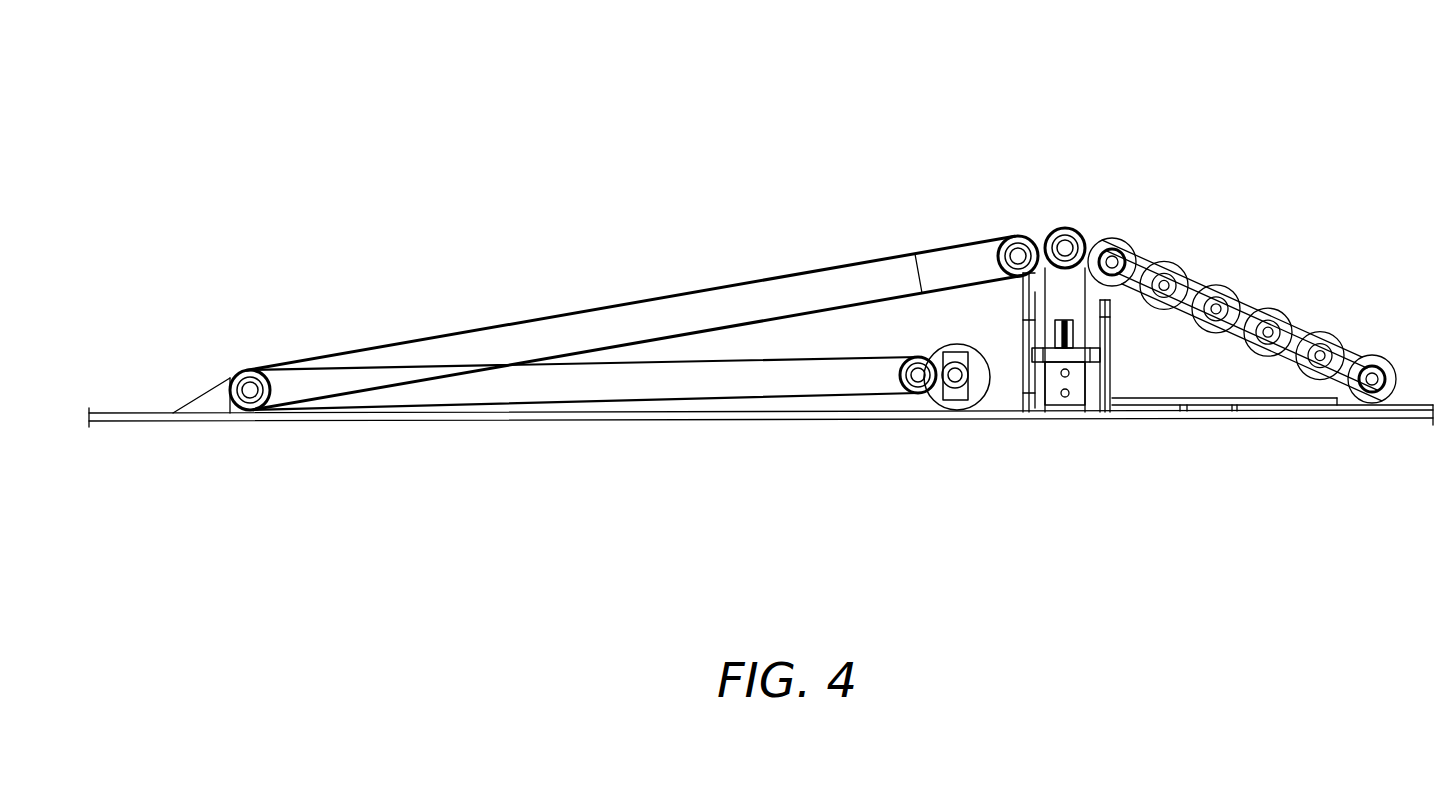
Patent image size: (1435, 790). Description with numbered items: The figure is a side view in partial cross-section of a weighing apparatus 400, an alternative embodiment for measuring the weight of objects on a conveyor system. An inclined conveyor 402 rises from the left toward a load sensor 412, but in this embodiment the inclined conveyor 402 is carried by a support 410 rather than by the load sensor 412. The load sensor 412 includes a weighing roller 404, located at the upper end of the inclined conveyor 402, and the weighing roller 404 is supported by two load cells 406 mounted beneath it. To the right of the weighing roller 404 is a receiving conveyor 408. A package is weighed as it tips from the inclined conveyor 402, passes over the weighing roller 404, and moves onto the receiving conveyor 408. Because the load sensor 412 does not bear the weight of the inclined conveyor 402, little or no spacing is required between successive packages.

The weighing apparatus 400 is at (480, 90).
The inclined conveyor 402 is at (691, 268).
The weighing roller 404 is at (1060, 228).
The load cells 406 is at (1073, 335).
The receiving conveyor 408 is at (1251, 272).
The support 410 is at (1020, 353).
The load sensor 412 is at (1063, 432).